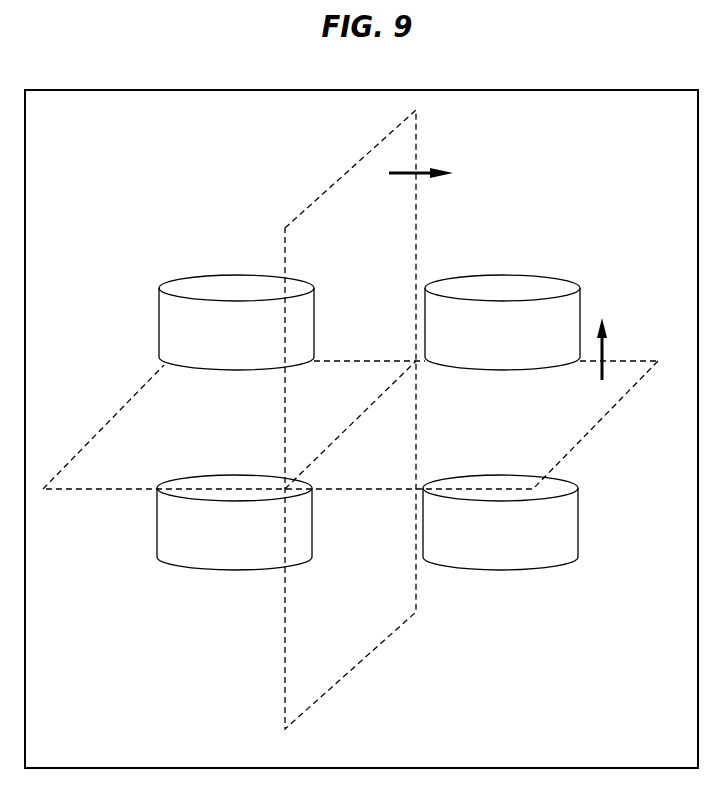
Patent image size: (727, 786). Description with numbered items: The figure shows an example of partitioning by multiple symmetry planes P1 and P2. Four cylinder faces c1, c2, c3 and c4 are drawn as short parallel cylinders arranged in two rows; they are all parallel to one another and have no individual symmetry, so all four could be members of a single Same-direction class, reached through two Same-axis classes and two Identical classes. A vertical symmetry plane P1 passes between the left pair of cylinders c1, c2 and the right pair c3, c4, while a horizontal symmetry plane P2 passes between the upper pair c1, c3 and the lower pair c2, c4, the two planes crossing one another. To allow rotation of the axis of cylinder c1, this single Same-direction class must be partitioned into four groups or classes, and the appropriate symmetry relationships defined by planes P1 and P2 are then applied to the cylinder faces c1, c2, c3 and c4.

The cylinder face c1 is at (236, 322).
The cylinder face c2 is at (234, 522).
The cylinder face c3 is at (502, 322).
The cylinder face c4 is at (500, 522).
The symmetry plane P1 is at (369, 419).
The symmetry plane P2 is at (350, 403).